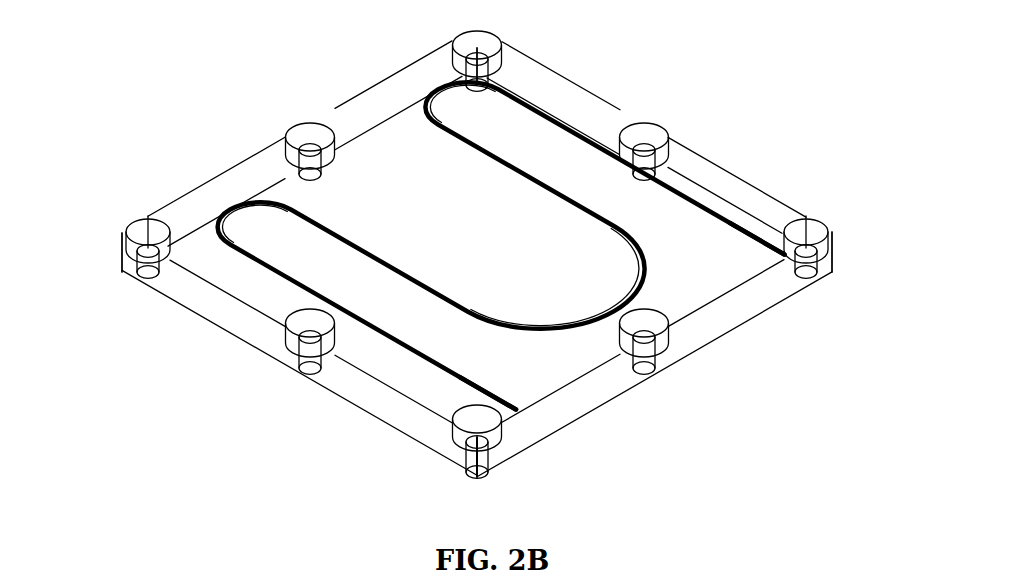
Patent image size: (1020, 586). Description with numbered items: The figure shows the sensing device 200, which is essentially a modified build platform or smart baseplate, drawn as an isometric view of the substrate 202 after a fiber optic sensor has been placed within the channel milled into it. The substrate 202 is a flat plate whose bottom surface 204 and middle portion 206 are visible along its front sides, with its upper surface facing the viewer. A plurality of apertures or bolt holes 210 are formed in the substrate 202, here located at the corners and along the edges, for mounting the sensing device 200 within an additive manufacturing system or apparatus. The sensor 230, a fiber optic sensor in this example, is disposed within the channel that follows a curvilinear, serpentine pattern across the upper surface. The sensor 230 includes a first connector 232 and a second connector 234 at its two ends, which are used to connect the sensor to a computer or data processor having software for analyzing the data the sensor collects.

The sensing device 200 is at (365, 58).
The substrate 202 is at (487, 241).
The bottom surface 204 is at (176, 300).
The middle portion 206 is at (760, 297).
The apertures or bolt holes 210 is at (482, 45).
The sensor 230 is at (548, 110).
The first connector 232 is at (518, 411).
The second connector 234 is at (787, 252).